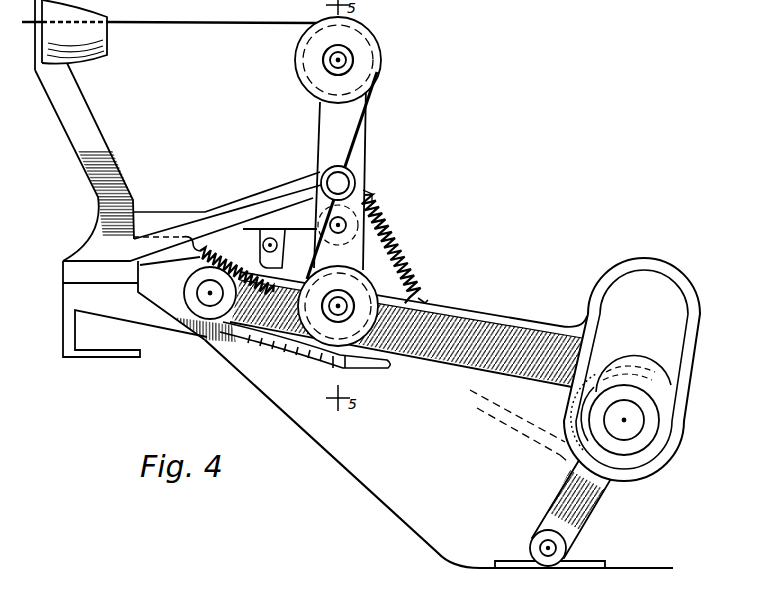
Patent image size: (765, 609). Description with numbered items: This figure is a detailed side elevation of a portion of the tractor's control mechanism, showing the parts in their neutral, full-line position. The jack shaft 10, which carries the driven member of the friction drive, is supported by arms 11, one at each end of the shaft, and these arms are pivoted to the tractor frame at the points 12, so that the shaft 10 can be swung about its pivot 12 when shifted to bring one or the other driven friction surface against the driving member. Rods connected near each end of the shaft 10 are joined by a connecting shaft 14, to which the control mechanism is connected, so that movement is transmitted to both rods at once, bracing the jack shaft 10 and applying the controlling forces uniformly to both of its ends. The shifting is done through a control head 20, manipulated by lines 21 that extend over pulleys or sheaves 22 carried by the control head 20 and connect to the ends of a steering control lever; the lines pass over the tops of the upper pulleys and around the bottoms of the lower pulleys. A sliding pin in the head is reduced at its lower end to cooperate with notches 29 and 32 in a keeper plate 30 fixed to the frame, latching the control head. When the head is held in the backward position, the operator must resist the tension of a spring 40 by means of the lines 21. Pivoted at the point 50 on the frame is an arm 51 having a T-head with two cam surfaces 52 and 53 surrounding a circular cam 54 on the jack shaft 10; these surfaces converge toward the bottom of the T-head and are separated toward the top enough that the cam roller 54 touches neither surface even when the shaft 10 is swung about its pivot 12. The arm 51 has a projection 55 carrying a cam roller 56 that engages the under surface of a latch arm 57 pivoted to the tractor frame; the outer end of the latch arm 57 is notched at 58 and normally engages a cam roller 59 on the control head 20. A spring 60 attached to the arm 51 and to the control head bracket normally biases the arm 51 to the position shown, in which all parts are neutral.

The jack shaft 10 is at (634, 432).
The arms 11 is at (593, 523).
The pivot points 12 is at (553, 558).
The connecting shaft 14 is at (207, 288).
The control head 20 is at (366, 84).
The lines 21 is at (222, 36).
The pulleys or sheaves 22 is at (376, 43).
The notch 29 is at (343, 371).
The keeper plate 30 is at (211, 300).
The notch 32 is at (258, 352).
The spring 40 is at (187, 299).
The pivot point 50 is at (208, 347).
The arm 51 is at (511, 317).
The cam surface 52 is at (633, 347).
The cam surface 53 is at (690, 329).
The circular cam 54 is at (650, 418).
The projection 55 is at (257, 257).
The cam roller 56 is at (253, 232).
The latch arm 57 is at (154, 212).
The notch 58 is at (384, 234).
The cam roller 59 is at (373, 204).
The spring 60 is at (447, 269).